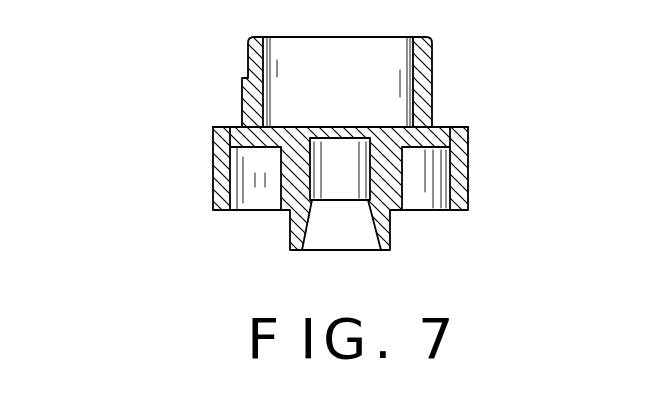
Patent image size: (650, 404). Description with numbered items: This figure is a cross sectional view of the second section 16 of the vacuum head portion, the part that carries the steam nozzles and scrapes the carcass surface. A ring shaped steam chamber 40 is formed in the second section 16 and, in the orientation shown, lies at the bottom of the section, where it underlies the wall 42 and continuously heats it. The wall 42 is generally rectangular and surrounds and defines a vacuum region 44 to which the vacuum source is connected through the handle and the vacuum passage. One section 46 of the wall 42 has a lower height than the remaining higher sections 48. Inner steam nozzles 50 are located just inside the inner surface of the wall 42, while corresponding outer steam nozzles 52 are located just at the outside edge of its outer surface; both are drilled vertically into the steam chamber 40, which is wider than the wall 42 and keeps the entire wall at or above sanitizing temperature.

The second section 16 is at (295, 137).
The steam chamber 40 is at (427, 210).
The wall 42 is at (440, 53).
The vacuum region 44 is at (359, 82).
The section of the wall 46 is at (243, 97).
The higher sections of the wall 48 is at (432, 100).
The inner steam nozzles 50 is at (410, 148).
The outer steam nozzles 52 is at (230, 146).